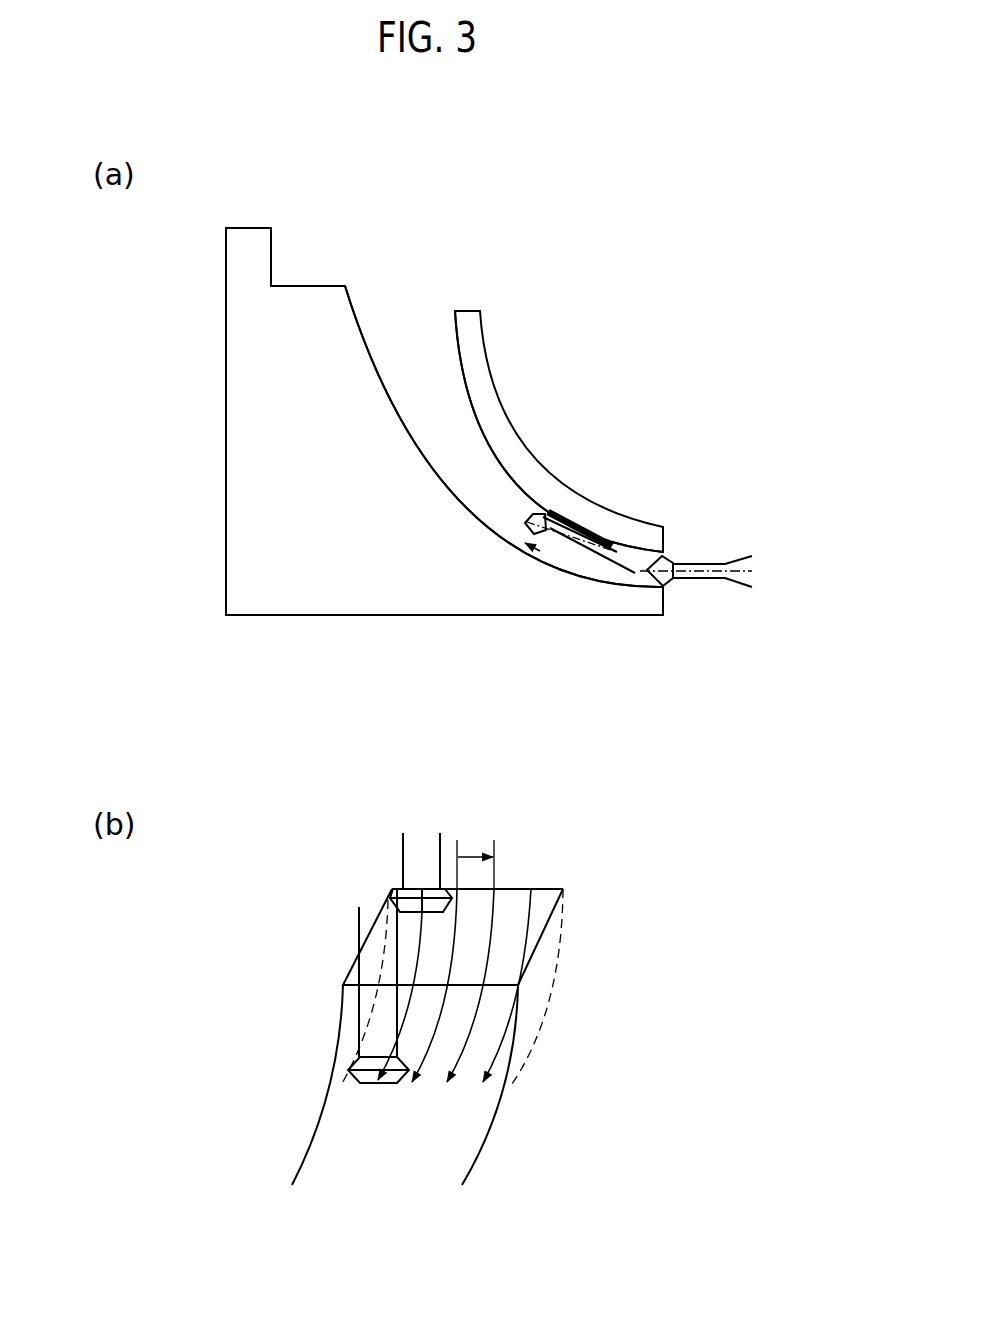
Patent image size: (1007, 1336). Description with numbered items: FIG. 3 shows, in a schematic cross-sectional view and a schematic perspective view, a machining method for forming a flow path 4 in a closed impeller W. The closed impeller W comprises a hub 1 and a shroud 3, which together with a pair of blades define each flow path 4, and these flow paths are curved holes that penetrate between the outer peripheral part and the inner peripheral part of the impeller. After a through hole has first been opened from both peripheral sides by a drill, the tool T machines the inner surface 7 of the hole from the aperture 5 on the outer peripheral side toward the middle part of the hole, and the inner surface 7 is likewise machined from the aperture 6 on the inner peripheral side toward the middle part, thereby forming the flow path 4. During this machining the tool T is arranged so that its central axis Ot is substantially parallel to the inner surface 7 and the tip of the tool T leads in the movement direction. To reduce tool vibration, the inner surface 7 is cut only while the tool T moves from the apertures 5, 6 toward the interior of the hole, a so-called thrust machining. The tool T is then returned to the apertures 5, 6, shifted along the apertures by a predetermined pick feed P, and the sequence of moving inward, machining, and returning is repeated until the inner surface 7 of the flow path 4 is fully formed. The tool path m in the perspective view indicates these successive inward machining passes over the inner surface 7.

The hub 1 is at (270, 471).
The closed impeller W is at (178, 246).
The shroud 3 is at (490, 415).
The flow path 4 is at (450, 488).
The aperture on the outer peripheral side 5 is at (667, 590).
The aperture on the inner peripheral side 6 is at (455, 312).
The inner surface 7 is at (462, 383).
The central axis Ot is at (538, 512).
The machining path / tool path m is at (589, 568).
The tool T is at (738, 591).
The pick feed P is at (475, 855).